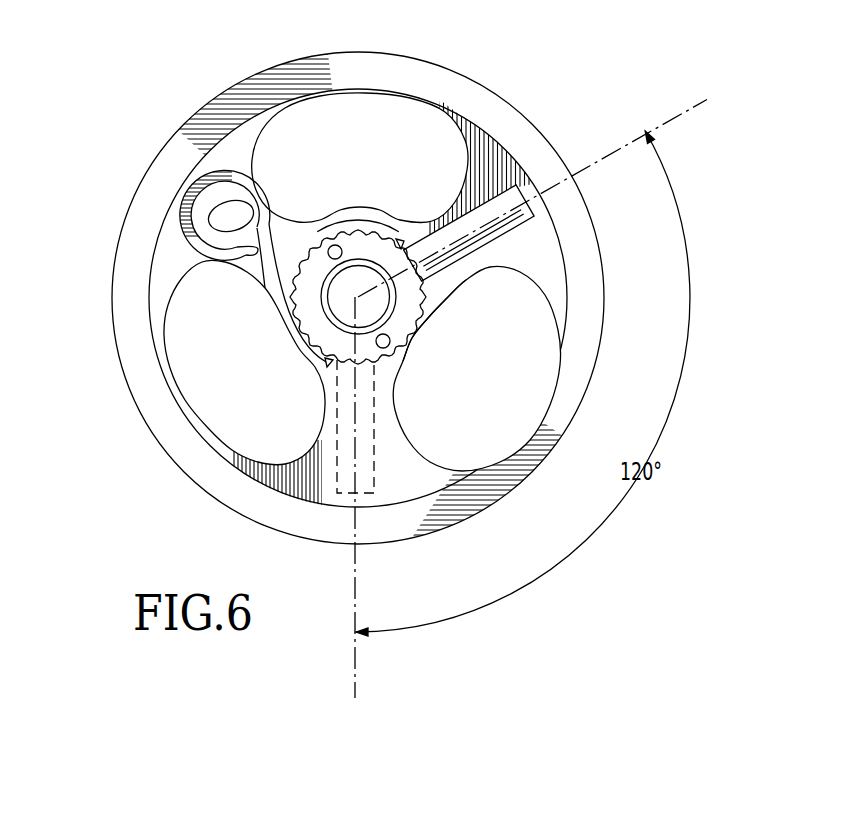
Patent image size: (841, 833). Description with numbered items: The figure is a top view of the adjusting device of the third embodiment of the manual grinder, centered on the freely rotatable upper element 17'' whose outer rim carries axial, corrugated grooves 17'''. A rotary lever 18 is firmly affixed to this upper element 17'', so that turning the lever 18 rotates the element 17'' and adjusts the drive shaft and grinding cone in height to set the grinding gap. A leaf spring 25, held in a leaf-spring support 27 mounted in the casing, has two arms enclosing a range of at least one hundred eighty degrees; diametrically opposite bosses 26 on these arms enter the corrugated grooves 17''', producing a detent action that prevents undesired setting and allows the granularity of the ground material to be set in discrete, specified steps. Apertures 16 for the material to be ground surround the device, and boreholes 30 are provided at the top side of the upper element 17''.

The apertures 16 is at (392, 117).
The freely rotatable element 17'' is at (266, 300).
The corrugated grooves 17''' is at (476, 320).
The rotary lever 18 is at (547, 203).
The leaf spring 25 is at (291, 325).
The bosses 26 is at (398, 235).
The leaf-spring support 27 is at (205, 181).
The boreholes 30 is at (335, 252).